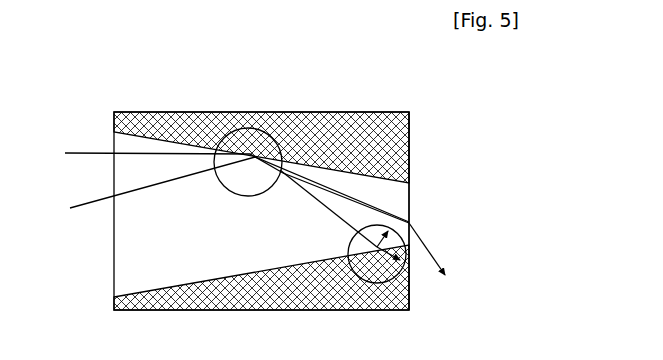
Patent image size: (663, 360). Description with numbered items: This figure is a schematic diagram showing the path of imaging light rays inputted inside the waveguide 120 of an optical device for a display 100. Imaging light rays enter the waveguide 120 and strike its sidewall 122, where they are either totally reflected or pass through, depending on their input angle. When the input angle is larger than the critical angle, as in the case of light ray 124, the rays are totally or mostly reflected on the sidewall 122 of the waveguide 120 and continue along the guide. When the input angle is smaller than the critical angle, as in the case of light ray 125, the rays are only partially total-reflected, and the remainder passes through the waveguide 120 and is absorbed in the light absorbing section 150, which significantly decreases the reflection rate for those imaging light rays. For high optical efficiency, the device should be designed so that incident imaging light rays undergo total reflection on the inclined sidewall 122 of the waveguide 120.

The optical device for a display 100 is at (168, 105).
The waveguide 120 is at (130, 268).
The sidewall 122 is at (114, 133).
The light ray 124 is at (262, 128).
The light ray 125 is at (398, 308).
The light absorbing section 150 is at (412, 135).